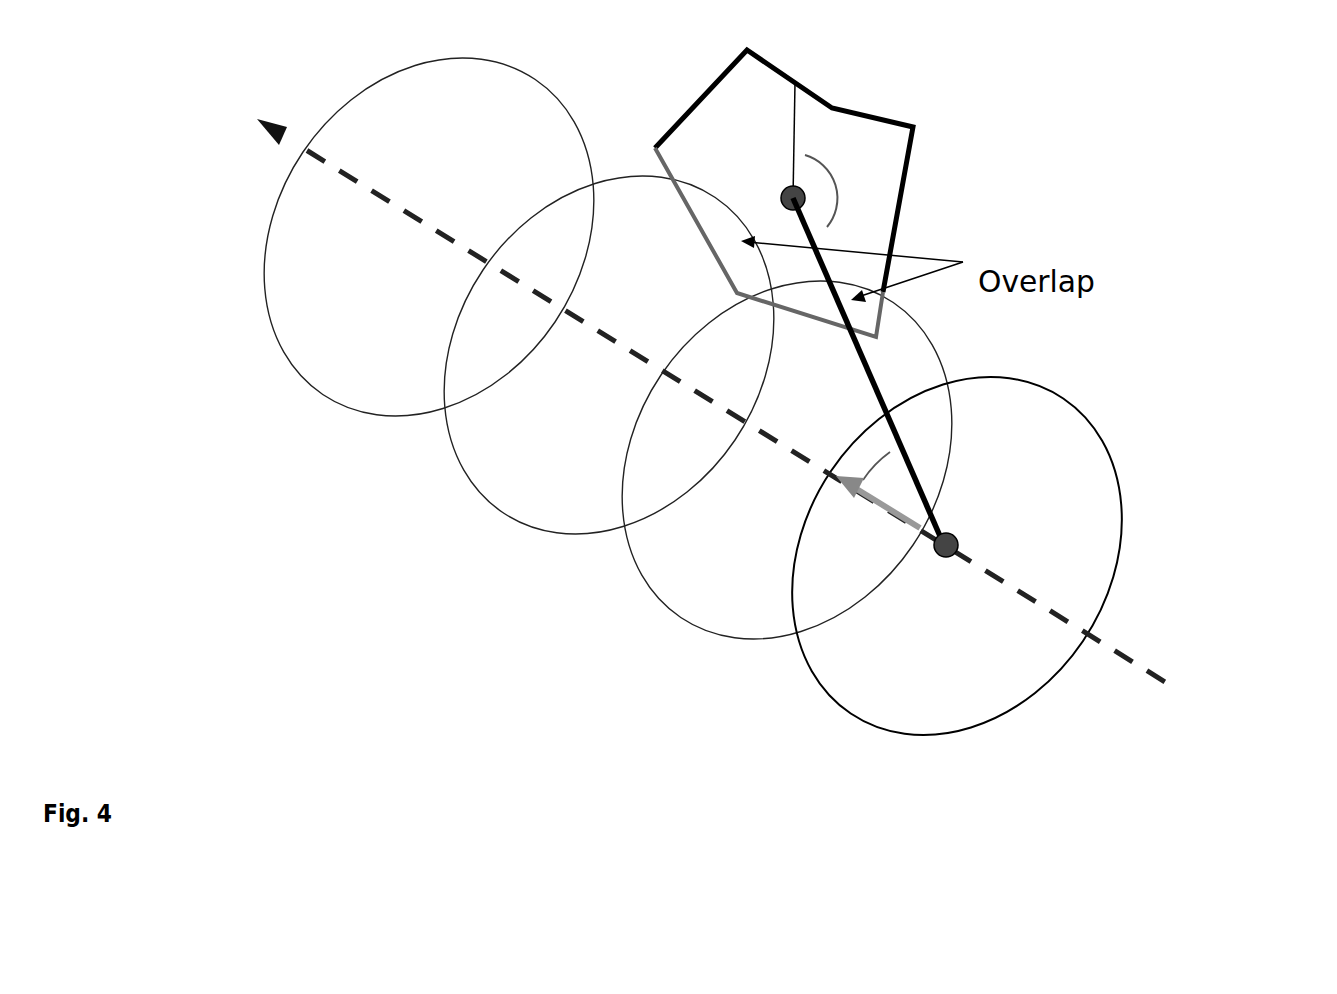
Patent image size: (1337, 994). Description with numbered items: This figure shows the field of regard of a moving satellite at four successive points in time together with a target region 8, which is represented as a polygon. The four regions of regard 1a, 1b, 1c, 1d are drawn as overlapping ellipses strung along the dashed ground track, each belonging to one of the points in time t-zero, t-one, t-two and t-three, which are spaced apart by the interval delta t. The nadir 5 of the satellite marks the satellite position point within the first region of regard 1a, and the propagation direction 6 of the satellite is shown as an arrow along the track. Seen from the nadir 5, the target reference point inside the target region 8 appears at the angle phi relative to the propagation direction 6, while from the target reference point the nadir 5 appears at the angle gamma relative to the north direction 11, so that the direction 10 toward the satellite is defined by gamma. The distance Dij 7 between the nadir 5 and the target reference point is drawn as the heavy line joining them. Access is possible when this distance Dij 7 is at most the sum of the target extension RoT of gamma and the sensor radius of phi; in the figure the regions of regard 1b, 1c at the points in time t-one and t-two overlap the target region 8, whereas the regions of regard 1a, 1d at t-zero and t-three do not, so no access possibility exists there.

The region of regard 1a is at (1118, 552).
The region of regard 1b is at (673, 613).
The region of regard 1c is at (485, 498).
The region of regard 1d is at (282, 350).
The nadir 5 is at (960, 538).
The propagation direction 6 is at (887, 520).
The distance Dij 7 is at (898, 430).
The target region 8 is at (903, 197).
The direction 10 is at (827, 272).
The north direction 11 is at (795, 145).